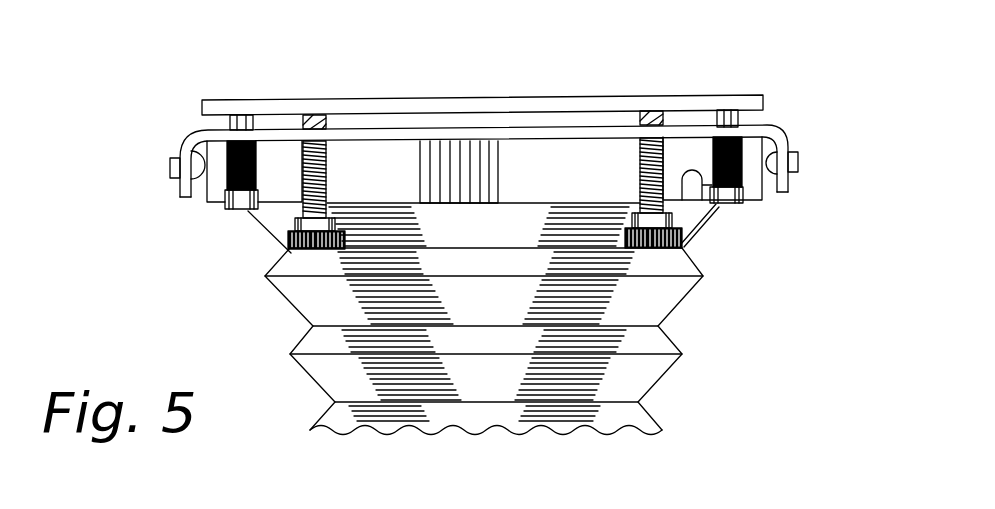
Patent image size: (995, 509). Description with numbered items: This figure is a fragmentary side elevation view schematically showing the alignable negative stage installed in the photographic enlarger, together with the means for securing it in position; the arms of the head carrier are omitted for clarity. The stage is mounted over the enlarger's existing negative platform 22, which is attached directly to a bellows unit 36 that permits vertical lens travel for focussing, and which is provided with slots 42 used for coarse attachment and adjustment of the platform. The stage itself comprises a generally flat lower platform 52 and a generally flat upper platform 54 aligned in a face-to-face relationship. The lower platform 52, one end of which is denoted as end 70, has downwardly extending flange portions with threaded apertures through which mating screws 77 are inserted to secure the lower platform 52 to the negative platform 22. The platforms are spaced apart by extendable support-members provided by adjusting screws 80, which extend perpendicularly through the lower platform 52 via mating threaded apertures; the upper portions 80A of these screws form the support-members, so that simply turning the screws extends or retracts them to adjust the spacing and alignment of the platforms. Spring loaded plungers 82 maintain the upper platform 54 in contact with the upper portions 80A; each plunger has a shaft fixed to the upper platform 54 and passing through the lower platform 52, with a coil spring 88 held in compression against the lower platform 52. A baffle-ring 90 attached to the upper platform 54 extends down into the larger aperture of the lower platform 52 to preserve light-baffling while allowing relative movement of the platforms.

The negative platform 22 is at (440, 153).
The bellows unit 36 is at (676, 376).
The slots 42 is at (704, 170).
The lower platform 52 is at (777, 140).
The upper platform 54 is at (752, 96).
The end of lower platform 70 is at (530, 135).
The screws 77 is at (170, 163).
The adjusting screws 80 is at (280, 221).
The upper portions of adjusting screws 80A is at (343, 114).
The spring loaded plungers 82 is at (229, 221).
The coil spring 88 is at (229, 177).
The baffle-ring 90 is at (280, 121).